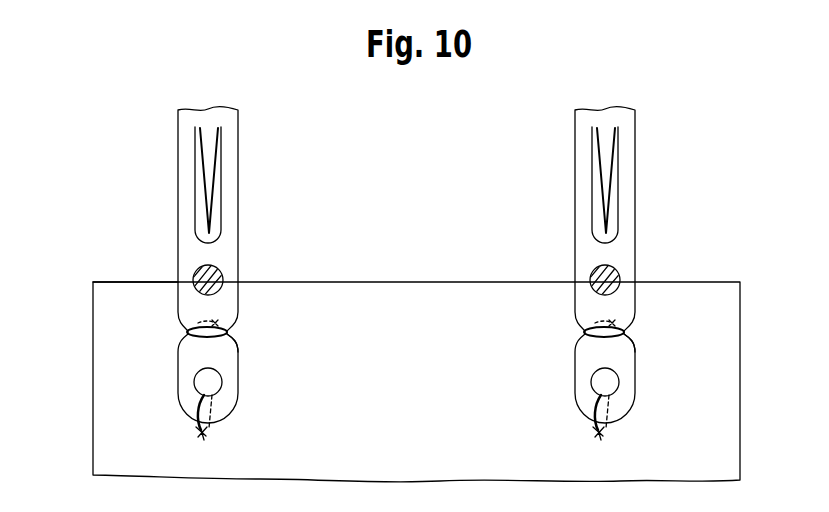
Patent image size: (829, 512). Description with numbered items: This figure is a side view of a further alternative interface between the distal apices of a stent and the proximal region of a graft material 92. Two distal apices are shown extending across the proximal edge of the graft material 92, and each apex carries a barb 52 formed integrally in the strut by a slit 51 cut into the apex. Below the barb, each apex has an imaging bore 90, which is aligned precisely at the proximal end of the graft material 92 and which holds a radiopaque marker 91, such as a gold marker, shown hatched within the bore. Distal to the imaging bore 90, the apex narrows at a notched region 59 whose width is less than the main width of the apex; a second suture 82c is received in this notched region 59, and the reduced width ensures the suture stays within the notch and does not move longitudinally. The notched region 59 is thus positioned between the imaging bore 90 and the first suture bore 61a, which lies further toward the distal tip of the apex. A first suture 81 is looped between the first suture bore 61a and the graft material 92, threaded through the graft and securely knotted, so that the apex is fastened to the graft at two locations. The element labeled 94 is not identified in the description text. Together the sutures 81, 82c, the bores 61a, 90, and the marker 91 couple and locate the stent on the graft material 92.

The slit 51 is at (197, 238).
The barb 52 is at (209, 212).
The notched region 59 is at (186, 333).
The first suture bore 61a is at (214, 381).
The first suture 81 is at (199, 428).
The second suture 82c is at (216, 340).
The imaging bore 90 is at (240, 288).
The radiopaque marker 91 is at (205, 279).
The graft material 92 is at (120, 389).
The housing top edge 94 is at (101, 316).